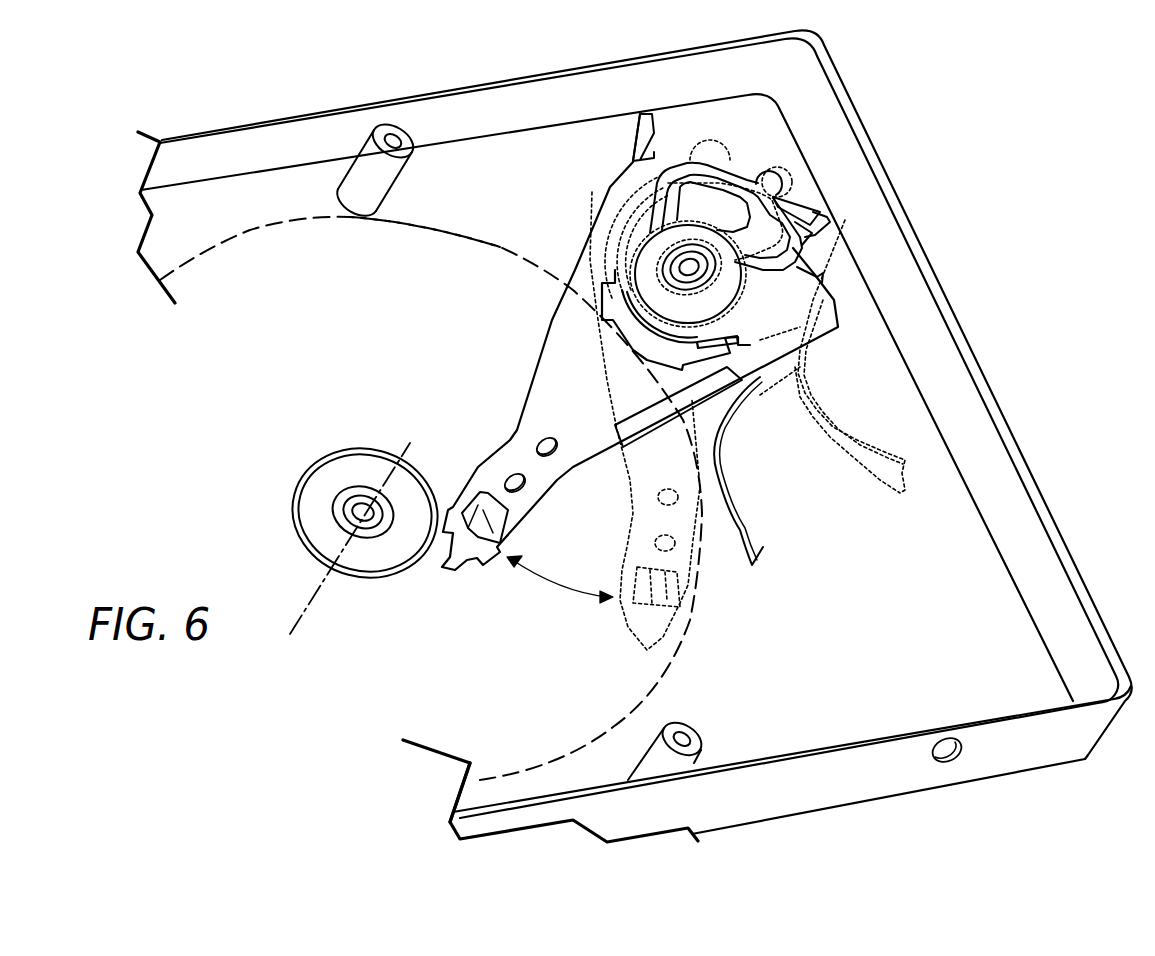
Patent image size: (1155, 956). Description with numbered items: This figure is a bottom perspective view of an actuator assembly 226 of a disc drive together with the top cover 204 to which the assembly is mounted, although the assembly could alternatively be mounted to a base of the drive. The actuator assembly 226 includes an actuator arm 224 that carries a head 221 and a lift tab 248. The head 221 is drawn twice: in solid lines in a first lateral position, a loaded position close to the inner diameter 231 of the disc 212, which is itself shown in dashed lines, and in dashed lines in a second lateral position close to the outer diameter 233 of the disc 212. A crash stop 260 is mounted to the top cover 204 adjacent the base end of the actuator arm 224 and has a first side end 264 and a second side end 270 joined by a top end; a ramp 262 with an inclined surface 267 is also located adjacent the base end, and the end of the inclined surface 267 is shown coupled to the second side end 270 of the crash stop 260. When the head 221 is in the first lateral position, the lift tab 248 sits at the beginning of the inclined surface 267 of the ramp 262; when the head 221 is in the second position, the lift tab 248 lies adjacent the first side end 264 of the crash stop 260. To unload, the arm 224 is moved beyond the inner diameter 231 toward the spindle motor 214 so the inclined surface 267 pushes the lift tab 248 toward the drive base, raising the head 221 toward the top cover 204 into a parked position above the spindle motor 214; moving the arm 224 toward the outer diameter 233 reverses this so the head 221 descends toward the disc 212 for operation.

The top cover 204 is at (977, 426).
The disc 212 is at (237, 235).
The spindle motor 214 is at (330, 483).
The head 221 is at (488, 513).
The actuator arm 224 is at (560, 350).
The actuator assembly 226 is at (500, 367).
The inner diameter 231 is at (407, 467).
The outer diameter 233 is at (455, 230).
The lift tab 248 is at (703, 143).
The crash stop 260 is at (630, 147).
The ramp 262 is at (790, 200).
The first side end 264 is at (638, 133).
The inclined surface 267 is at (805, 208).
The second side end 270 is at (815, 235).